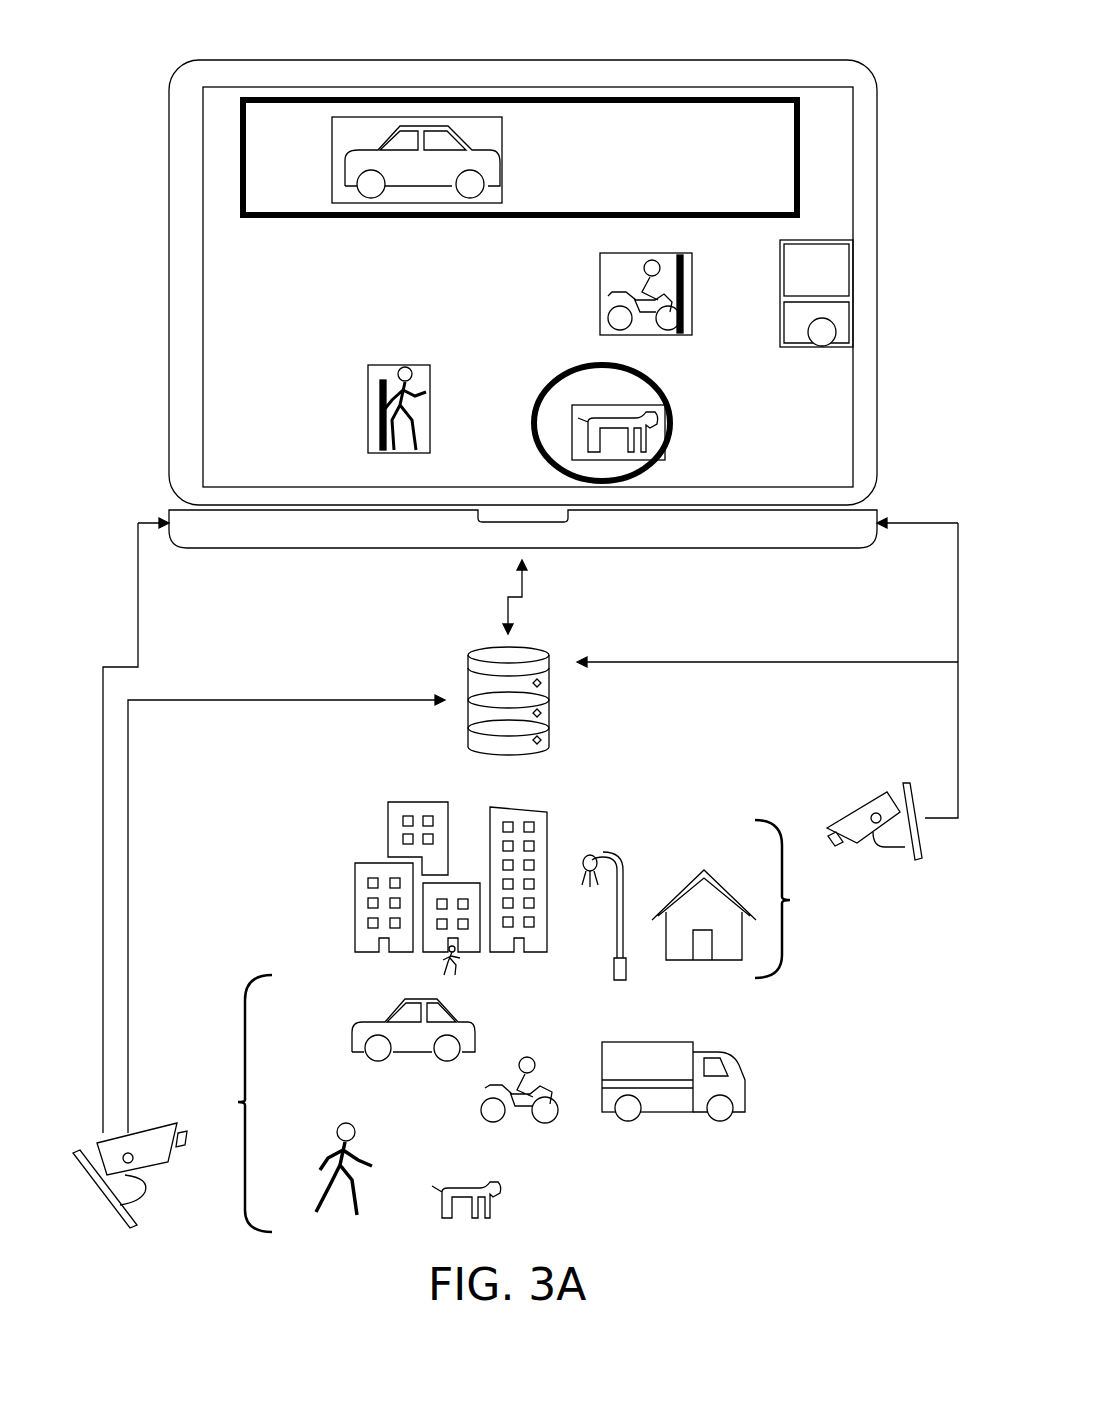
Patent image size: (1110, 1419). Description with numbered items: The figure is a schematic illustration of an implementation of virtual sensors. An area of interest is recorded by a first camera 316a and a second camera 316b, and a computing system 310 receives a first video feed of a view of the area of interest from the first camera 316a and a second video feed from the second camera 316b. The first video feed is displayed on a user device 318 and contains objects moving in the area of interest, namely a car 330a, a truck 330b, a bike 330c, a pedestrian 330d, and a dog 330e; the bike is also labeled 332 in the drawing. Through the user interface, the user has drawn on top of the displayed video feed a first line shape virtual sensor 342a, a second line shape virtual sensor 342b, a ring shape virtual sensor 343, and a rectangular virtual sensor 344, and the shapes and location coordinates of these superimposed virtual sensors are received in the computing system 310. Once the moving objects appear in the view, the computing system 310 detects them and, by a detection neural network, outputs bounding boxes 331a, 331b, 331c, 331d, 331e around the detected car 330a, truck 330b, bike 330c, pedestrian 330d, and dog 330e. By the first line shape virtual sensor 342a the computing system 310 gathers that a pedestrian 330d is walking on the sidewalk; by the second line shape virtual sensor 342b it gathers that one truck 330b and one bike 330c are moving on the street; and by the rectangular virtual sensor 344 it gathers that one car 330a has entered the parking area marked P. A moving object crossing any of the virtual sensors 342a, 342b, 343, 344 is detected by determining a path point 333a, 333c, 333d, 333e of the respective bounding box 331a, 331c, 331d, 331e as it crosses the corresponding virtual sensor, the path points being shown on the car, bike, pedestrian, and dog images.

The computing system 310 is at (525, 662).
The first camera 316a is at (150, 1150).
The second camera 316b is at (870, 822).
The user device 318 is at (828, 42).
The car 330a is at (242, 1029).
The truck 330b is at (790, 900).
The bike 330c is at (553, 1117).
The pedestrian 330d is at (319, 1254).
The dog 330e is at (482, 1195).
The bounding box 331a is at (588, 66).
The bounding box 331b is at (898, 316).
The bounding box 331c is at (262, 258).
The bounding box 331d is at (196, 346).
The bounding box 331e is at (665, 406).
The object 332 is at (610, 1161).
The path point 333a is at (574, 167).
The path point 333c is at (552, 364).
The object image 333d is at (400, 455).
The path point 333e is at (640, 470).
The first line shape virtual sensor 342a is at (210, 450).
The second line shape virtual sensor 342b is at (860, 110).
The ring shape virtual sensor 343 is at (670, 450).
The rectangular virtual sensor 344 is at (212, 59).